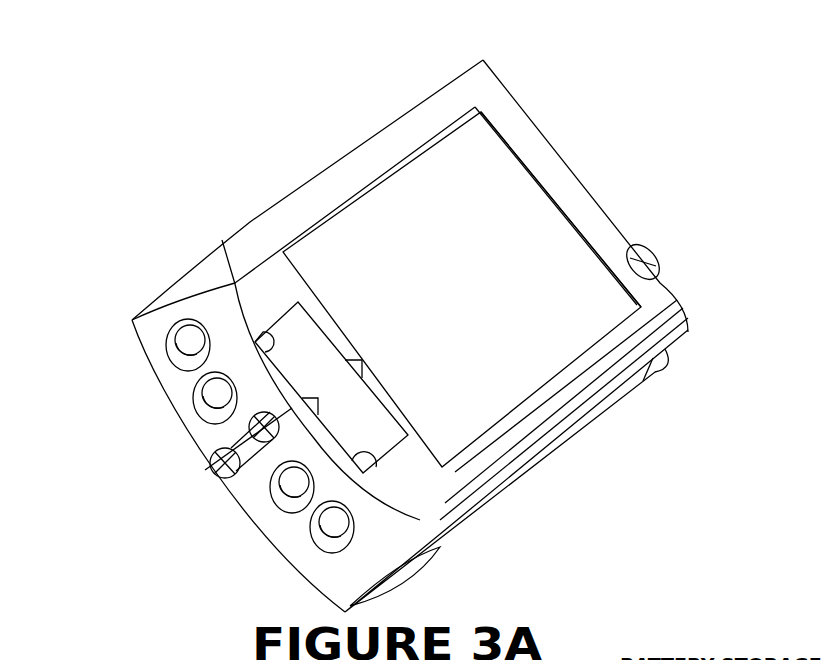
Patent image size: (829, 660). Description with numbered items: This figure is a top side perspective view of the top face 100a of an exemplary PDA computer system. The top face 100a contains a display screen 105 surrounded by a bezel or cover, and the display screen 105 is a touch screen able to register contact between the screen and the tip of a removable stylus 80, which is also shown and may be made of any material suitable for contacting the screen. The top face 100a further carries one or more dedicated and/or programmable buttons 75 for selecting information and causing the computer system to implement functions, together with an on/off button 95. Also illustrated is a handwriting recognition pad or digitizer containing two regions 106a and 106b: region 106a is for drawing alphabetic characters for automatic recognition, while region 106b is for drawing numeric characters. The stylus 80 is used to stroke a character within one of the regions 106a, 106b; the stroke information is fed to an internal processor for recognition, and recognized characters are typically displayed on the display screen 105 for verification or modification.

The top face 100a is at (181, 31).
The dedicated and/or programmable buttons 75 is at (190, 335).
The on/off button 95 is at (658, 261).
The display screen 105 is at (438, 312).
The region 106a is at (323, 350).
The region 106b is at (390, 446).
The stylus 80 is at (587, 420).